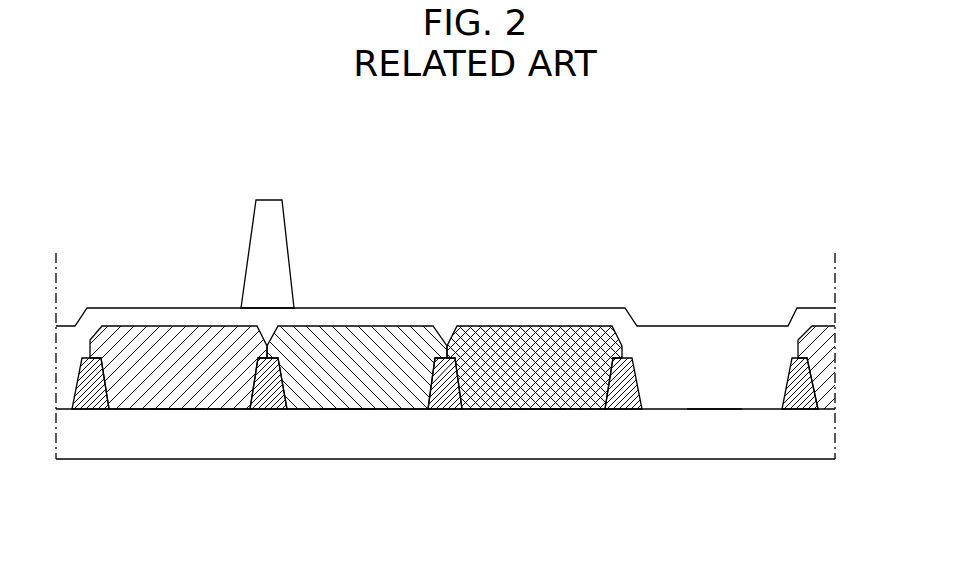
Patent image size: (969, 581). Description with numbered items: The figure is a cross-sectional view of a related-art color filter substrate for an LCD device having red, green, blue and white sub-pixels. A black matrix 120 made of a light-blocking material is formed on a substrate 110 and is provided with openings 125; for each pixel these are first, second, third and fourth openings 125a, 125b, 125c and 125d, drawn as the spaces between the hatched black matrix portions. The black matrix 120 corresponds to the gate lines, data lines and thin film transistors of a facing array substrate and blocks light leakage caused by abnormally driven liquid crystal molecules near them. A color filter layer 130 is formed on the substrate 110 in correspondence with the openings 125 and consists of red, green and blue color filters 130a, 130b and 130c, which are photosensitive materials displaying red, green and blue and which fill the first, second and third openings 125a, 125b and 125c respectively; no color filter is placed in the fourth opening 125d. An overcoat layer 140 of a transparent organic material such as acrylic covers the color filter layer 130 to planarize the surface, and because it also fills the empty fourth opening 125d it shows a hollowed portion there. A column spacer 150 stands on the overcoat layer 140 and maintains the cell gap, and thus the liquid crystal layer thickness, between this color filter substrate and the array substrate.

The substrate 110 is at (411, 446).
The black matrix 120 is at (823, 393).
The openings 125 is at (720, 508).
The first opening 125a is at (177, 405).
The second opening 125b is at (348, 405).
The third opening 125c is at (540, 405).
The fourth opening 125d is at (715, 405).
The color filter layer 130 is at (172, 182).
The red color filter 130a is at (175, 337).
The green color filter 130b is at (353, 337).
The blue color filter 130c is at (535, 335).
The overcoat layer 140 is at (700, 337).
The column spacer 150 is at (250, 243).